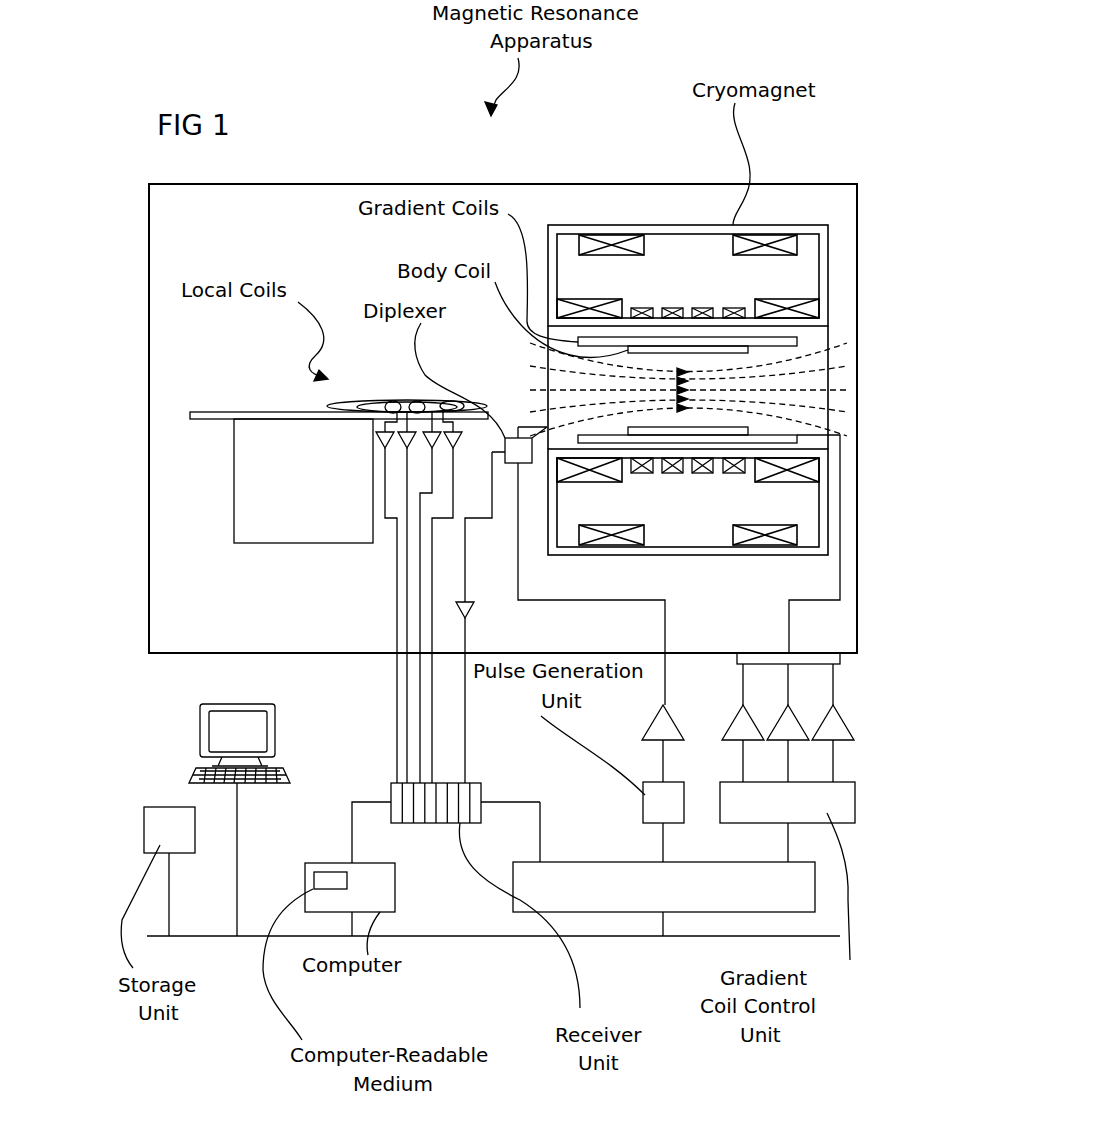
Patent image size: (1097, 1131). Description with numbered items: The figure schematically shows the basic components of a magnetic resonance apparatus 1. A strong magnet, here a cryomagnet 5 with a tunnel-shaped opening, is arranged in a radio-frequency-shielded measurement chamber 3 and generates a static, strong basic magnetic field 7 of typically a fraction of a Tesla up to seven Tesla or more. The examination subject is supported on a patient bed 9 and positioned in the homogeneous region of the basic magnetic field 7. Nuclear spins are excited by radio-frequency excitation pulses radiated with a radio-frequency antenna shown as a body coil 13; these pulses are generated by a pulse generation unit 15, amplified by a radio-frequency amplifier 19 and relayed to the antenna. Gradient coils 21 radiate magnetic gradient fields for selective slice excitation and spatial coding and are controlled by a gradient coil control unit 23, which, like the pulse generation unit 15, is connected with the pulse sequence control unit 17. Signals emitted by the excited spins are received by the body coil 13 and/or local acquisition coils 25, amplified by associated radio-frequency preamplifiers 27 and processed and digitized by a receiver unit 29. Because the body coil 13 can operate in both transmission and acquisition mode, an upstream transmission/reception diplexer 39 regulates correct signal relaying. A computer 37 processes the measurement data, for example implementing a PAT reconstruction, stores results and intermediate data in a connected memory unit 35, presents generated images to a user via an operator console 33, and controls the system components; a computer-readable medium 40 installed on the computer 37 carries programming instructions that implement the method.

The magnetic resonance apparatus 1 is at (472, 962).
The radio-frequency-shielded measurement chamber 3 is at (438, 184).
The cryomagnet 5 is at (703, 225).
The basic magnetic field 7 is at (533, 371).
The patient bed 9 is at (222, 412).
The body coil 13 is at (717, 353).
The pulse generation unit 15 is at (645, 797).
The pulse sequence control unit 17 is at (573, 862).
The radio-frequency amplifier 19 is at (646, 716).
The gradient coils 21 is at (657, 343).
The gradient coil control unit 23 is at (720, 782).
The local acquisition coils 25 is at (407, 401).
The radio-frequency preamplifiers 27 is at (462, 438).
The receiver unit 29 is at (432, 823).
The operator console 33 is at (275, 748).
The memory unit 35 is at (168, 807).
The computer 37 is at (395, 900).
The transmission/reception diplexer 39 is at (520, 463).
The computer-readable medium 40 is at (330, 872).